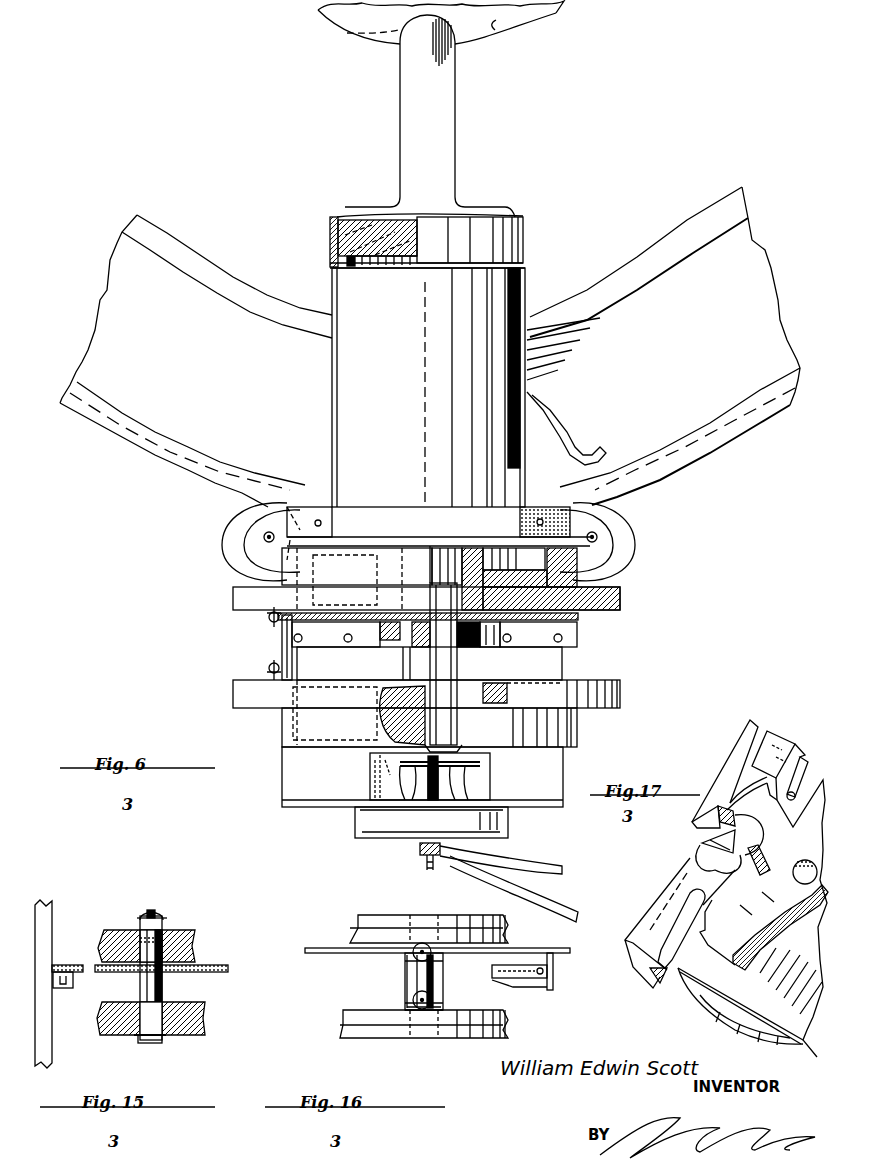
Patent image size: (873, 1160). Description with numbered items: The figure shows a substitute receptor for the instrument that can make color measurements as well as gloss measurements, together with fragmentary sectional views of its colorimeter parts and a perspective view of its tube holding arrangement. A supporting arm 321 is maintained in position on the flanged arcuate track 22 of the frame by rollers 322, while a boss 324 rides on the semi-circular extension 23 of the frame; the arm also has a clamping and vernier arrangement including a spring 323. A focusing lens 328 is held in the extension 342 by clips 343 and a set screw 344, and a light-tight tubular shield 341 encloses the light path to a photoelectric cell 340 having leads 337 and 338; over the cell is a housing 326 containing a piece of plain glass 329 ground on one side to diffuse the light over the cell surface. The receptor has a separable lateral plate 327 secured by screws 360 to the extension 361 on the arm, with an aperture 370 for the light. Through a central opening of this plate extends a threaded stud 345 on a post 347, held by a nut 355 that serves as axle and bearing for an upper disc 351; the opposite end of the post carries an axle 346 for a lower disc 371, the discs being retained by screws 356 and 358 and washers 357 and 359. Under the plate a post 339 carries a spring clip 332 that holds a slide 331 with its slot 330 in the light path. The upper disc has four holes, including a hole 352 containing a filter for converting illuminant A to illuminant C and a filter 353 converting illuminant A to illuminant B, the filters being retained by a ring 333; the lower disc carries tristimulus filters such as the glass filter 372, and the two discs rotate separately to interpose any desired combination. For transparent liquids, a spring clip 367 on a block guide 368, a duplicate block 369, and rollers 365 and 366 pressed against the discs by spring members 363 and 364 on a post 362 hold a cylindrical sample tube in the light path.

In FIG. 6, the flanged arcuate guide or track 22 is at (175, 417).
In FIG. 6, the semi-circular extension 23 is at (500, 22).
In FIG. 6, the supporting arm 321 is at (437, 181).
In FIG. 15, the supporting arm 321 is at (50, 906).
In FIG. 6, the rollers 322 is at (238, 527).
In FIG. 6, the spring 323 is at (566, 428).
In FIG. 6, the boss 324 is at (353, 32).
In FIG. 6, the housing 326 is at (398, 750).
In FIG. 6, the lateral extension plate 327 is at (580, 618).
In FIG. 15, the lateral extension plate 327 is at (80, 968).
In FIG. 16, the lateral extension plate 327 is at (535, 950).
In FIG. 17, the lateral extension plate 327 is at (670, 883).
In FIG. 6, the focusing lens 328 is at (384, 222).
In FIG. 6, the plain glass 329 is at (480, 770).
In FIG. 6, the slot 330 is at (428, 640).
In FIG. 6, the slide 331 is at (390, 644).
In FIG. 6, the spring clip 332 is at (503, 684).
In FIG. 6, the ring 333 is at (552, 557).
In FIG. 6, the lead 337 is at (478, 870).
In FIG. 6, the lead 338 is at (505, 868).
In FIG. 6, the post 339 is at (560, 646).
In FIG. 6, the photoelectric cell 340 is at (412, 818).
In FIG. 6, the light-tight tubular shield 341 is at (336, 300).
In FIG. 6, the extension 342 is at (512, 250).
In FIG. 6, the clips 343 is at (340, 222).
In FIG. 6, the set screw 344 is at (338, 238).
In FIG. 15, the threaded stud 345 is at (173, 928).
In FIG. 15, the axle 346 is at (185, 1020).
In FIG. 6, the post 347 is at (444, 668).
In FIG. 15, the post 347 is at (147, 980).
In FIG. 16, the post 347 is at (405, 980).
In FIG. 6, the upper disc 351 is at (605, 605).
In FIG. 15, the upper disc 351 is at (194, 951).
In FIG. 16, the upper disc 351 is at (395, 925).
In FIG. 17, the upper disc 351 is at (747, 923).
In FIG. 6, the third hole 352 is at (578, 618).
In FIG. 6, the filter 353 is at (430, 575).
In FIG. 15, the nut 355 is at (142, 942).
In FIG. 15, the screw 356 is at (151, 910).
In FIG. 15, the washer 357 is at (158, 918).
In FIG. 15, the screw 358 is at (158, 1039).
In FIG. 15, the washer 359 is at (140, 1036).
In FIG. 15, the screws 360 is at (64, 965).
In FIG. 15, the extension 361 is at (57, 988).
In FIG. 6, the post 362 is at (284, 656).
In FIG. 16, the post 362 is at (425, 980).
In FIG. 16, the spring member 363 is at (412, 1025).
In FIG. 16, the spring member 364 is at (410, 965).
In FIG. 6, the roller 365 is at (270, 668).
In FIG. 16, the roller 365 is at (422, 1008).
In FIG. 6, the roller 366 is at (270, 619).
In FIG. 16, the roller 366 is at (422, 948).
In FIG. 16, the spring clip 367 is at (512, 972).
In FIG. 17, the spring clip 367 is at (806, 756).
In FIG. 16, the block guide 368 is at (548, 985).
In FIG. 17, the block guide 368 is at (768, 745).
In FIG. 17, the duplicate trough or block 369 is at (650, 975).
In FIG. 17, the aperture 370 is at (678, 850).
In FIG. 6, the lower disc 371 is at (613, 706).
In FIG. 15, the lower disc 371 is at (193, 1027).
In FIG. 16, the lower disc 371 is at (350, 1035).
In FIG. 17, the lower disc 371 is at (705, 1010).
In FIG. 6, the glass filter 372 is at (500, 672).